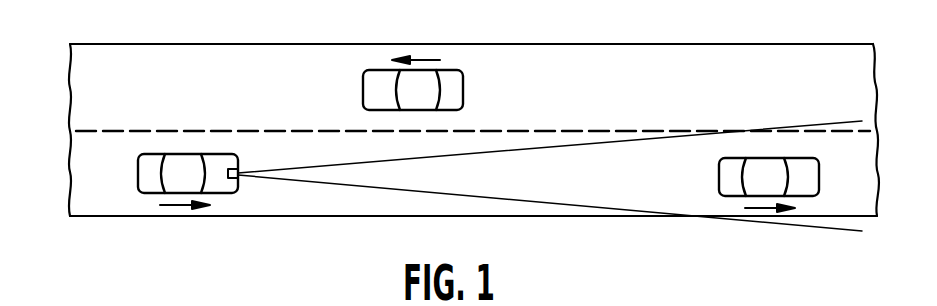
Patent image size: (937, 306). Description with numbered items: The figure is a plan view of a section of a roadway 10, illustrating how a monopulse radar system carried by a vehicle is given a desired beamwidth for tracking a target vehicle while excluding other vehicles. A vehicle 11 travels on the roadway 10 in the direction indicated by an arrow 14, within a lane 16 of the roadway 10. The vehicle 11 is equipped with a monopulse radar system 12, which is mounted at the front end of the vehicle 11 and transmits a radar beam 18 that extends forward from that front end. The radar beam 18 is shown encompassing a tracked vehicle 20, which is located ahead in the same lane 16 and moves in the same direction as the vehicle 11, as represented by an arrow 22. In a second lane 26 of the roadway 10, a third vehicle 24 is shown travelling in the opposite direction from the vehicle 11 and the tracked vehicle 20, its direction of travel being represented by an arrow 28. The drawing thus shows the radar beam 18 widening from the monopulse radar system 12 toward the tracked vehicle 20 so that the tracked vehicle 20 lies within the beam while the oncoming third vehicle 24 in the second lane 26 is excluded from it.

The roadway 10 is at (354, 208).
The vehicle 11 is at (148, 175).
The monopulse radar system 12 is at (241, 176).
The arrow 14 is at (180, 205).
The lane 16 is at (80, 170).
The radar beam 18 is at (567, 205).
The tracked vehicle 20 is at (722, 178).
The arrow 22 is at (762, 208).
The third vehicle 24 is at (454, 88).
The second lane 26 is at (76, 89).
The arrow 28 is at (423, 60).